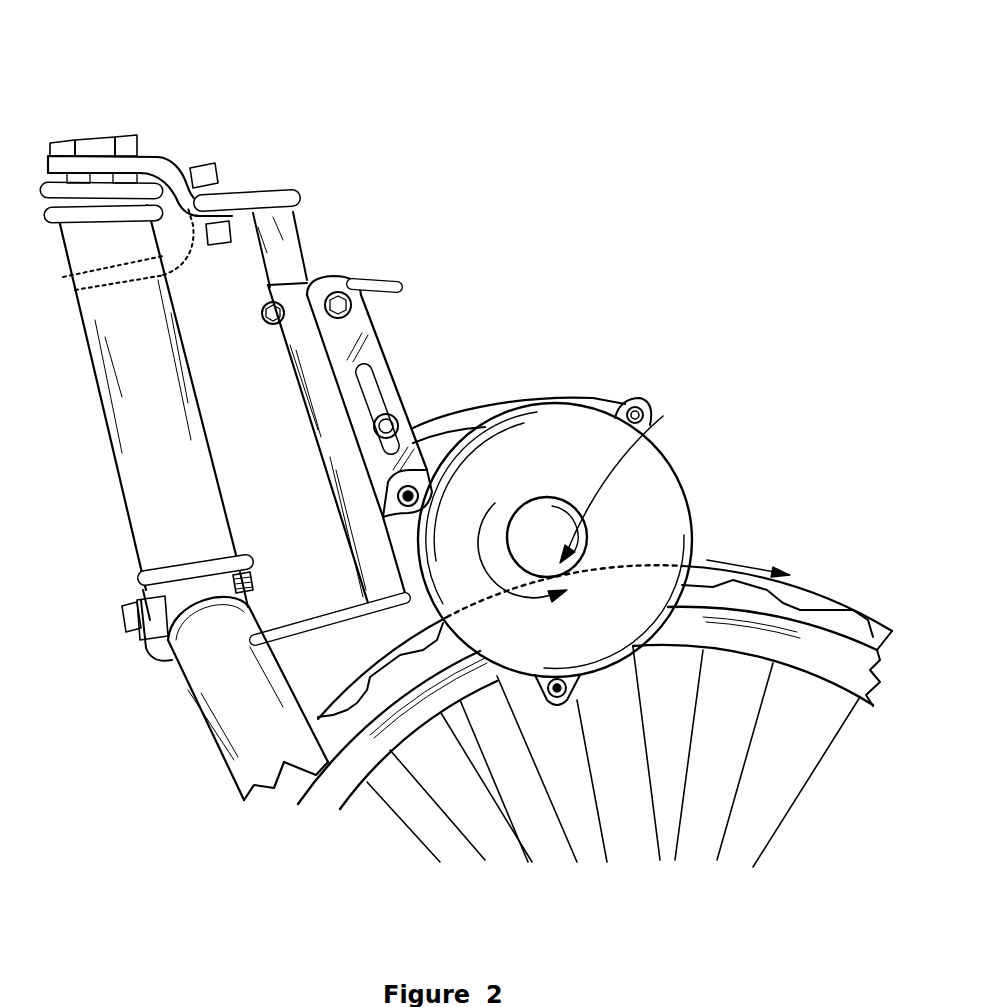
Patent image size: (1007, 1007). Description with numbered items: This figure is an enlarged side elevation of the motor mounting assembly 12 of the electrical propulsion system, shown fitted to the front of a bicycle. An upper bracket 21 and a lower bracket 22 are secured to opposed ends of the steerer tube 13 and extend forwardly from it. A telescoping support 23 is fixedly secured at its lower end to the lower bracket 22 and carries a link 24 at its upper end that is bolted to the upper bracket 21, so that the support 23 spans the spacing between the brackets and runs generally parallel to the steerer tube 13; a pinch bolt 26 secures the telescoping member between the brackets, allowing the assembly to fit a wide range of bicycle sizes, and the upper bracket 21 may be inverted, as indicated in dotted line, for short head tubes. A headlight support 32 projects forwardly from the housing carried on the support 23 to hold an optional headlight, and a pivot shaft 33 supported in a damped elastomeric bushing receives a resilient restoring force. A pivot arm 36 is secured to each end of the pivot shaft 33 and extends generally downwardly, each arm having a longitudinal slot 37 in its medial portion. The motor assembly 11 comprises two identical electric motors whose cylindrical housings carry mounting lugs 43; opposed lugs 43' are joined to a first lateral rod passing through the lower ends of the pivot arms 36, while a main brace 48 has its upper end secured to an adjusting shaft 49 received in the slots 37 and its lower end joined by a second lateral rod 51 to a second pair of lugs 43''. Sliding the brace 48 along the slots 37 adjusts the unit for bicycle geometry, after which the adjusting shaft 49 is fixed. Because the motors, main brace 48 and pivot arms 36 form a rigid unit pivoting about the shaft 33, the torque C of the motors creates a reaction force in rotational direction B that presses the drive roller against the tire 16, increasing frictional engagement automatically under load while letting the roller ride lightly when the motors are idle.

The motor assembly 11 is at (633, 316).
The motor mounting assembly 12 is at (413, 160).
The steerer tube 13 is at (120, 483).
The tire 16 is at (803, 587).
The upper bracket 21 is at (167, 157).
The lower bracket 22 is at (150, 650).
The telescoping support 23 is at (290, 358).
The link 24 is at (273, 197).
The pinch bolt 26 is at (263, 307).
The headlight support 32 is at (377, 281).
The pivot shaft 33 is at (331, 297).
The pivot arm 36 is at (380, 343).
The slot 37 is at (367, 390).
The mounting lug 43 is at (572, 788).
The mounting lug 43' is at (358, 524).
The mounting lug 43'' is at (616, 353).
The main brace 48 is at (452, 428).
The adjusting shaft 49 is at (394, 418).
The second lateral rod 51 is at (641, 405).
The rotational direction B is at (618, 478).
The torque C is at (522, 548).